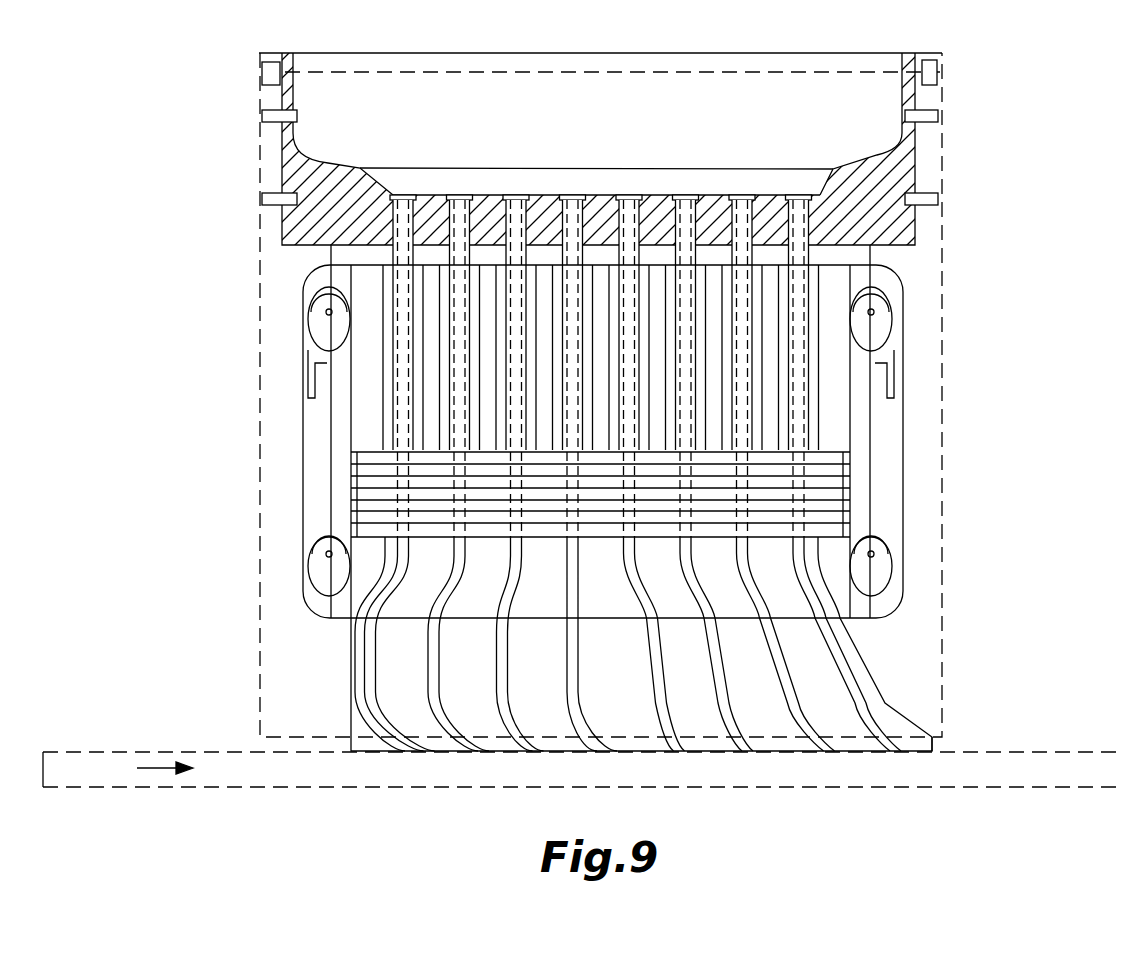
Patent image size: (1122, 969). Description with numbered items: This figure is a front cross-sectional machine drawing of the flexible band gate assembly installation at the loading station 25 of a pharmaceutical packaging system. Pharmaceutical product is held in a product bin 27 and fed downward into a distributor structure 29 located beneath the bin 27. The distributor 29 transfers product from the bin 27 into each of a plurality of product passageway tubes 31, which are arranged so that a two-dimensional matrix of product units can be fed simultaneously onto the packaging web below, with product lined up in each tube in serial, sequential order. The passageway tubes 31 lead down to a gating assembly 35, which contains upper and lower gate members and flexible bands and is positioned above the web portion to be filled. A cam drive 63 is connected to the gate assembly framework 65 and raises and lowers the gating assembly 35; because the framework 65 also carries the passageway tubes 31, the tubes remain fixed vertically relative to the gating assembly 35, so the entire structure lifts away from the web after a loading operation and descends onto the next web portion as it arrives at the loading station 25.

The loading station 25 is at (243, 487).
The product bin 27 is at (633, 128).
The distributor structure 29 is at (737, 193).
The product feed passageways 31 is at (817, 405).
The gating assembly 35 is at (892, 462).
The cam drive 63 is at (303, 342).
The gate assembly framework 65 is at (338, 415).